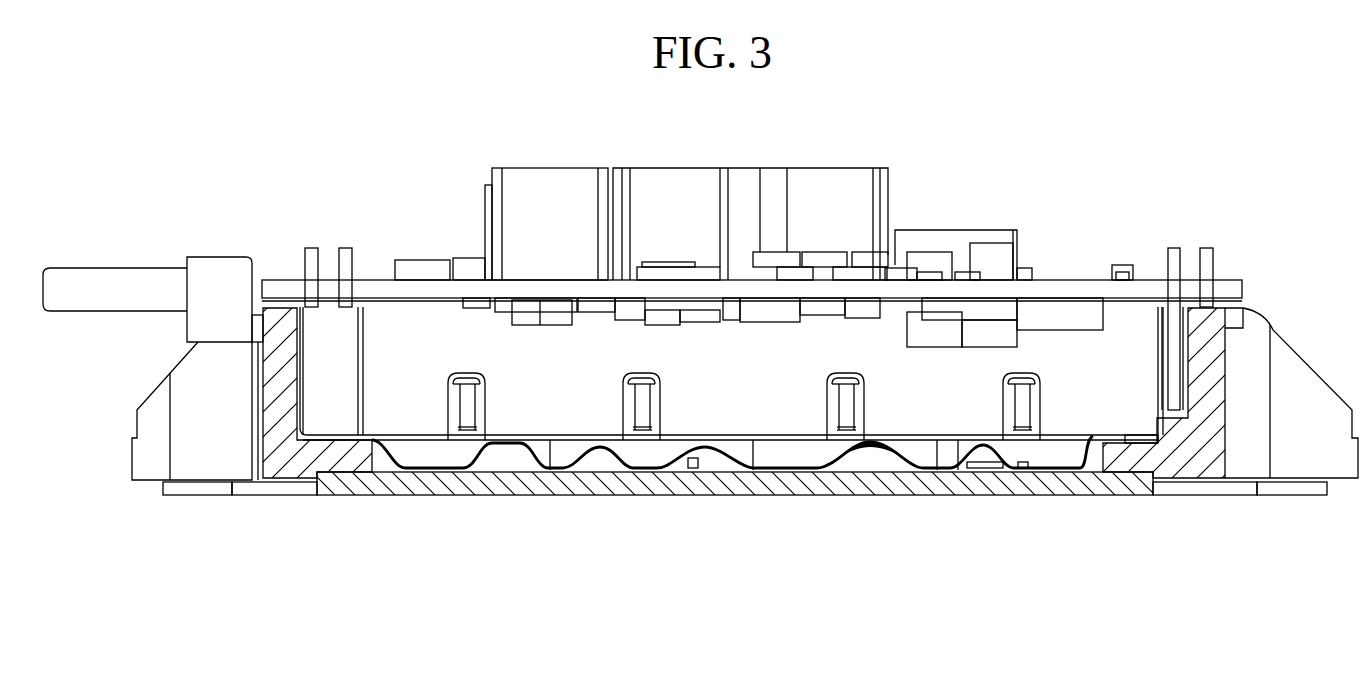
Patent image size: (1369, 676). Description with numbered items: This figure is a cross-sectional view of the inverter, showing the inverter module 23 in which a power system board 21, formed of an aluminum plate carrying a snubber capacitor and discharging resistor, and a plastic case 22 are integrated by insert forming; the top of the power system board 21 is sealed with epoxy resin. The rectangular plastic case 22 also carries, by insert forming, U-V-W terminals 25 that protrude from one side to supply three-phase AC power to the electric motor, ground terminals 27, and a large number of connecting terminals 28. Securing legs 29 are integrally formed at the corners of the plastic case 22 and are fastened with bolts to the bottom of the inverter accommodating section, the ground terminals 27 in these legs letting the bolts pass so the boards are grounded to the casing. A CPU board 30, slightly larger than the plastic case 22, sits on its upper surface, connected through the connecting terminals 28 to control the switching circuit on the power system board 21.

The power system board 21 is at (620, 485).
The plastic case 22 is at (298, 445).
The inverter module 23 is at (905, 522).
The U-V-W terminals 25 is at (115, 284).
The ground terminals 27 is at (210, 486).
The connecting terminals 28 is at (310, 247).
The securing legs 29 is at (190, 420).
The CPU board 30 is at (373, 290).